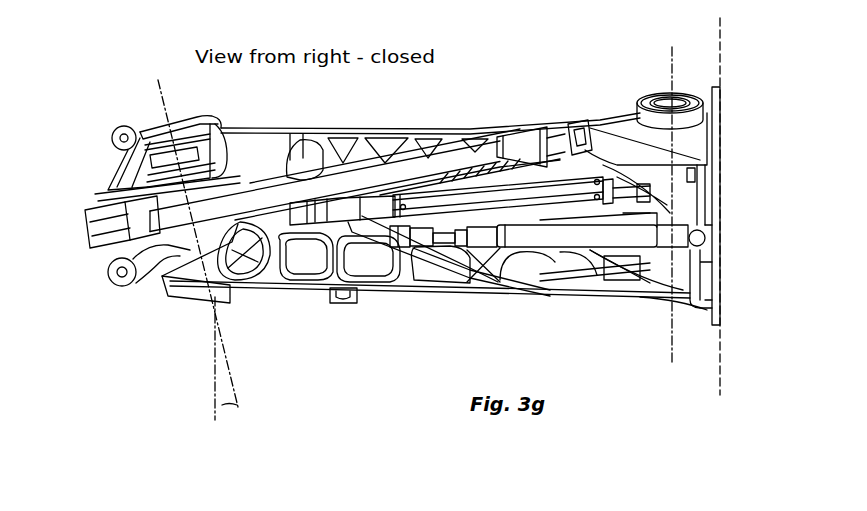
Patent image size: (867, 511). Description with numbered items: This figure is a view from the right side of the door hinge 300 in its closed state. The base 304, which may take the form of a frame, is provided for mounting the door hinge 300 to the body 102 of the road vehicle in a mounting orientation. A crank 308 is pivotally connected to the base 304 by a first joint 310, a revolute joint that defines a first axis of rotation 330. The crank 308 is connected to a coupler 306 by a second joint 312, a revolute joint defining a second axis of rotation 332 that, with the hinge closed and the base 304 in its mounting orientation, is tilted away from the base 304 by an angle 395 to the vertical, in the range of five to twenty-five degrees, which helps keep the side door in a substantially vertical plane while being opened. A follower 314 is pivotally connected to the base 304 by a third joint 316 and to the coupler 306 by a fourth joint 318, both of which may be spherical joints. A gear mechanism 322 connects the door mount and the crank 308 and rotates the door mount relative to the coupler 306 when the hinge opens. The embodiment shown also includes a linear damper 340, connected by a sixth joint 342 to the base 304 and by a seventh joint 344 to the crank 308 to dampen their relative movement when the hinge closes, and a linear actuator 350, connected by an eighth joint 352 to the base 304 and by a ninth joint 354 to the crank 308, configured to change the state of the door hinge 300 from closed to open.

The body 102 is at (722, 40).
The door hinge 300 is at (571, 37).
The base 304 is at (722, 173).
The coupler 306 is at (88, 208).
The crank 308 is at (281, 288).
The first joint 310 is at (660, 91).
The second joint 312 is at (147, 130).
The follower 314 is at (493, 142).
The third joint 316 is at (571, 115).
The fourth joint 318 is at (93, 243).
The gear mechanism 322 is at (107, 173).
The first axis of rotation 330 is at (672, 338).
The second axis of rotation 332 is at (222, 340).
The damper 340 is at (520, 273).
The sixth joint 342 is at (704, 262).
The seventh joint 344 is at (453, 287).
The actuator 350 is at (395, 237).
The eighth joint 352 is at (705, 230).
The ninth joint 354 is at (345, 303).
The angle 395 is at (230, 405).